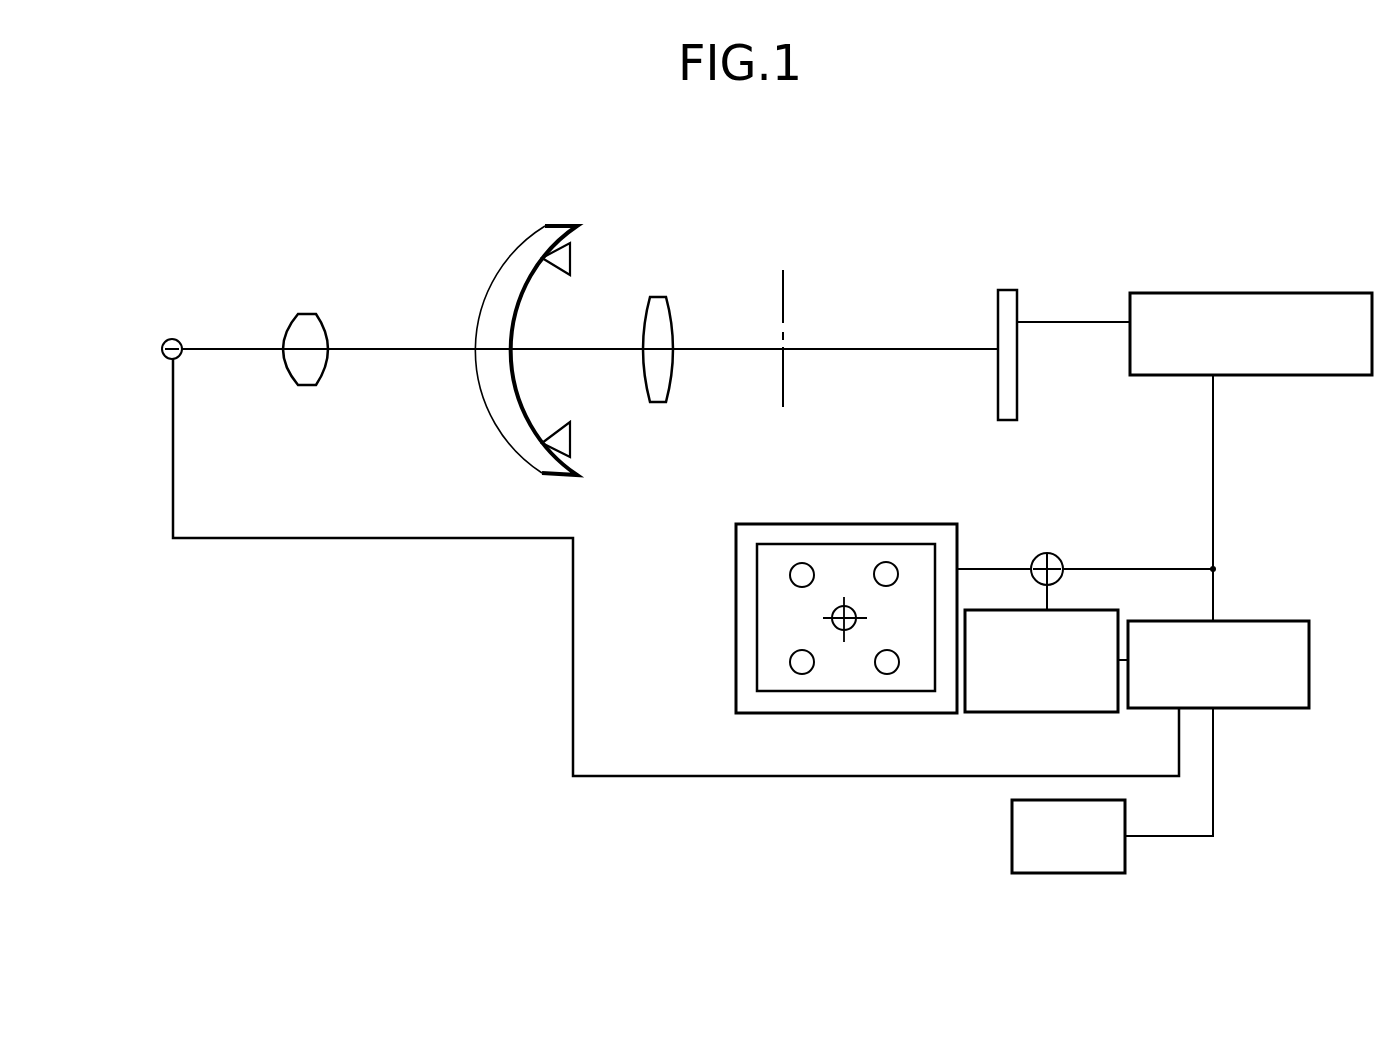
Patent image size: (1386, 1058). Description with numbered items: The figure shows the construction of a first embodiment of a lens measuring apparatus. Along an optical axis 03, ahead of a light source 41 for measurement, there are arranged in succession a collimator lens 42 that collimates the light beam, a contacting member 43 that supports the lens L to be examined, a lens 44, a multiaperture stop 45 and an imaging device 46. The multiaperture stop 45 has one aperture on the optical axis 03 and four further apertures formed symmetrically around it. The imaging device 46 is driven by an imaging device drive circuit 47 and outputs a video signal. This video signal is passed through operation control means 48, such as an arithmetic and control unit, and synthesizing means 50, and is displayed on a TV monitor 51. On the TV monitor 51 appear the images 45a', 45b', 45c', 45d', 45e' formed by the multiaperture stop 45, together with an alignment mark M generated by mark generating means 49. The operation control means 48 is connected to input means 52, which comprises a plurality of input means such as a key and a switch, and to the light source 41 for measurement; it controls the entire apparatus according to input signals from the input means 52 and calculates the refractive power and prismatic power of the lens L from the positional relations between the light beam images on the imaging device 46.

The light source for measurement 41 is at (172, 339).
The collimator lens 42 is at (306, 314).
The optical axis 03 is at (393, 349).
The lens to be examined L is at (553, 228).
The contacting member 43 is at (562, 262).
The lens 44 is at (660, 297).
The multiaperture stop 45 is at (783, 270).
The imaging device 46 is at (1010, 290).
The imaging device drive circuit 47 is at (1188, 293).
The operation control means 48 is at (1265, 621).
The mark generating means 49 is at (1005, 712).
The synthesizing means 50 is at (1052, 553).
The TV monitor 51 is at (736, 606).
The input means 52 is at (1050, 873).
The image of aperture 45a 45a' is at (874, 540).
The image of aperture 45b 45b' is at (933, 523).
The image of aperture 45c 45c' is at (919, 750).
The image of aperture 45d 45d' is at (747, 750).
The image of aperture 45e 45e' is at (756, 514).
The alignment mark M is at (829, 628).